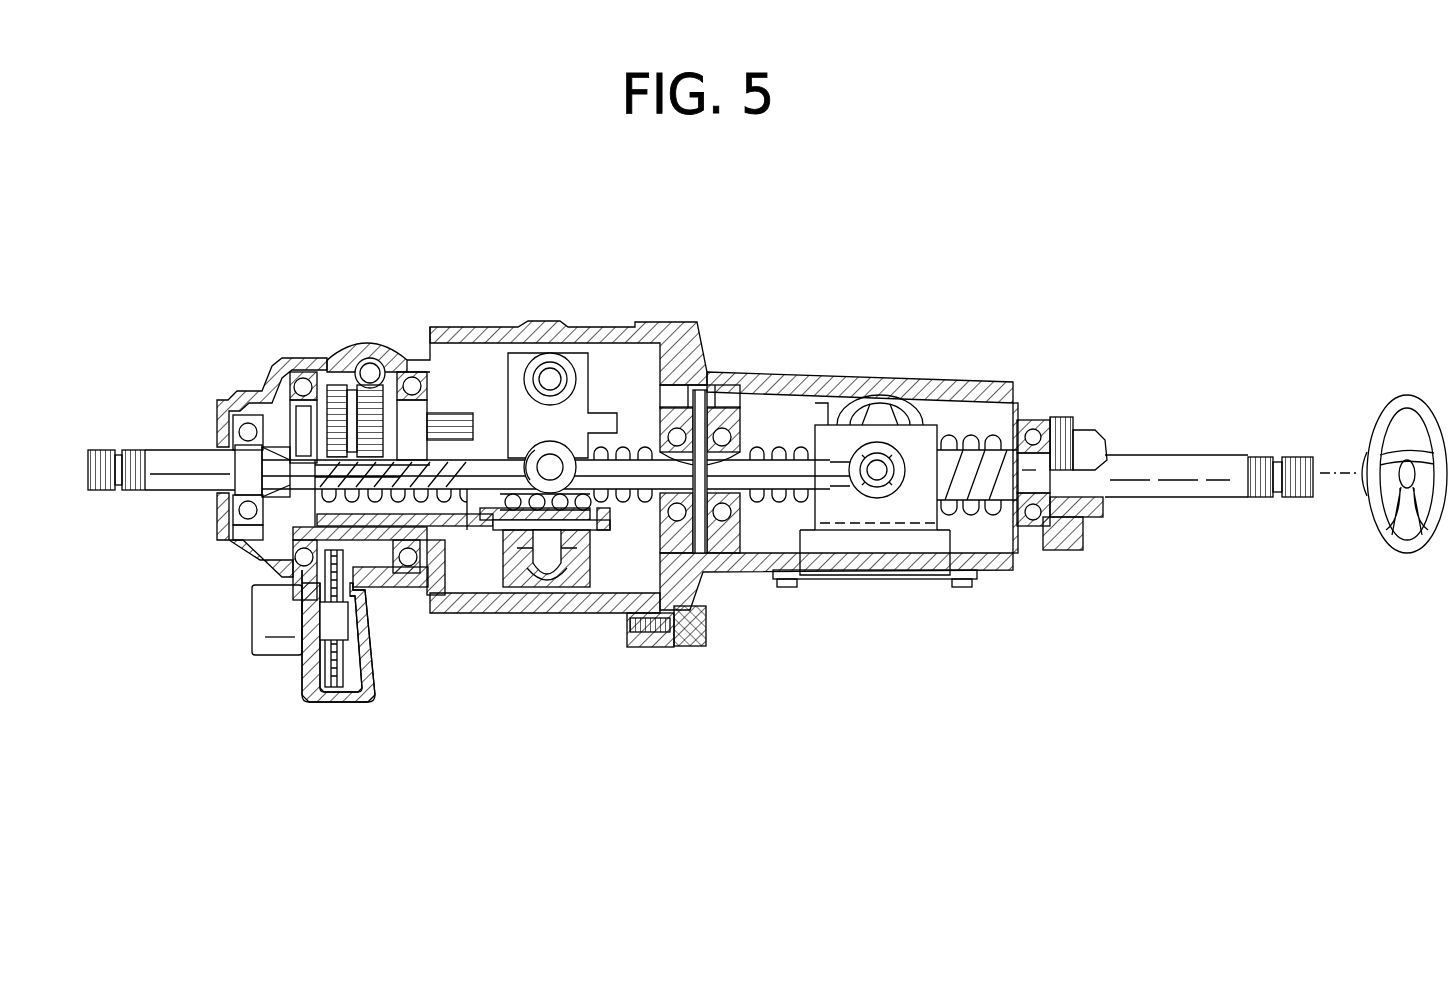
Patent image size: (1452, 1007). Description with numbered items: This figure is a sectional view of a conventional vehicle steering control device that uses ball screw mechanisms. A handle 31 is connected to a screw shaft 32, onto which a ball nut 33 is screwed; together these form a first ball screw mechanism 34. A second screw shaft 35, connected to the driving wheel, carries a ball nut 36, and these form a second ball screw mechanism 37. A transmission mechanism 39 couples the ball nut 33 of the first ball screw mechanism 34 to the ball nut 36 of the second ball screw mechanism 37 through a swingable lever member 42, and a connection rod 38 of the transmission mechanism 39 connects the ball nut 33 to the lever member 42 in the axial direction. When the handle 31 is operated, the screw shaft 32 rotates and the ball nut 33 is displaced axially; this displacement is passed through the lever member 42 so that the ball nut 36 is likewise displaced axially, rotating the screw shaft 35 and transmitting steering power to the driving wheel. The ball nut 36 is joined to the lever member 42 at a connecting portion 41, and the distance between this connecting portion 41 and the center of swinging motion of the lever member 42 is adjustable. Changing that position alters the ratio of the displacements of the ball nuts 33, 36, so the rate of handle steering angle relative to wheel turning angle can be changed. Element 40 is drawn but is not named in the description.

The handle 31 is at (1400, 397).
The screw shaft 32 is at (977, 447).
The ball nut 33 is at (913, 447).
The first ball screw mechanism 34 is at (915, 403).
The screw shaft 35 is at (458, 528).
The ball nut 36 is at (585, 542).
The second ball screw mechanism 37 is at (552, 634).
The connection rod 38 is at (823, 480).
The transmission mechanism 39 is at (447, 545).
The bolt 40 is at (550, 372).
The connecting portion 41 is at (504, 558).
The lever member 42 is at (585, 405).